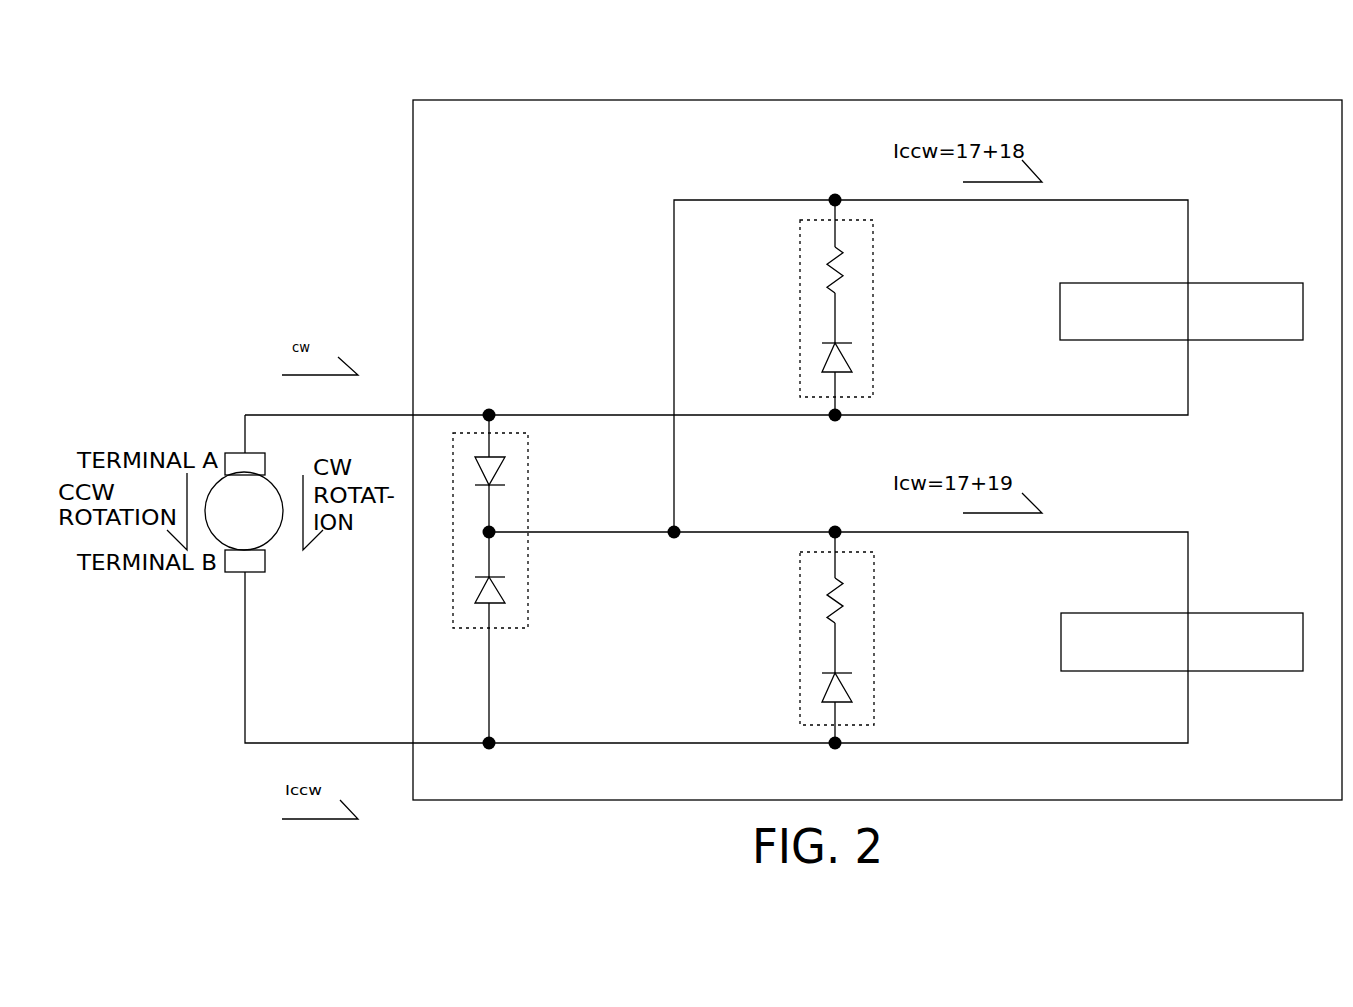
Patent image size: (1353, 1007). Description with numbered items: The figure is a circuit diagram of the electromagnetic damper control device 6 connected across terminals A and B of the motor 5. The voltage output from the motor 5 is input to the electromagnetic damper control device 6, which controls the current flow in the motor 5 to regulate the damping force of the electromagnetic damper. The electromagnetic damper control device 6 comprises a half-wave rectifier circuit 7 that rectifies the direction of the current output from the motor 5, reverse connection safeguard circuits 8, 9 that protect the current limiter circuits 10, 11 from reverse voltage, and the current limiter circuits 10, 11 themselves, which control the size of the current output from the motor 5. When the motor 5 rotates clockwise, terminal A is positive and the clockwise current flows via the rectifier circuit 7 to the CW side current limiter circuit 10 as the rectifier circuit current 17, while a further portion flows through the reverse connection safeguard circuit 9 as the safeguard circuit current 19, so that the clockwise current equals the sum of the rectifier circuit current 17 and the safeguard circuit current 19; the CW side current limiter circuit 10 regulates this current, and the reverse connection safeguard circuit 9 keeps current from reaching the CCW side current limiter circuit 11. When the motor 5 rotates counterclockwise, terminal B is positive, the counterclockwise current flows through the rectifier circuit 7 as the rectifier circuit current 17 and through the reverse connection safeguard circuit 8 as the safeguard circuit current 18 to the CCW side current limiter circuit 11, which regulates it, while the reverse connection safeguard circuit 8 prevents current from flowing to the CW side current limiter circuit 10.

The motor 5 is at (306, 533).
The electromagnetic damper control device 6 is at (877, 423).
The half-wave rectifier circuit 7 is at (558, 579).
The reverse connection safeguard circuit 8 is at (981, 637).
The reverse connection safeguard circuit 9 is at (982, 307).
The CW side current limiter circuit 10 is at (1181, 310).
The CCW side current limiter circuit 11 is at (1182, 642).
The rectifier circuit current 17 is at (547, 570).
The safeguard circuit current 18 is at (783, 687).
The safeguard circuit current 19 is at (782, 355).